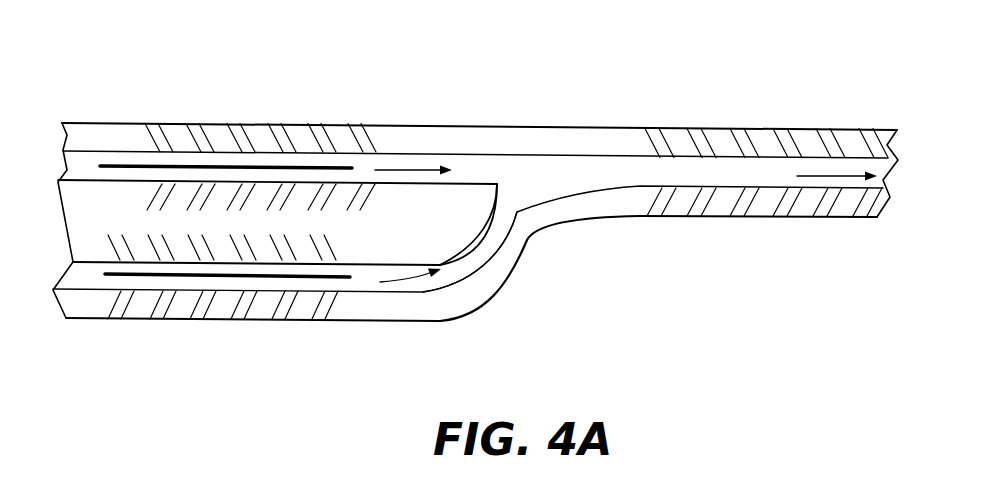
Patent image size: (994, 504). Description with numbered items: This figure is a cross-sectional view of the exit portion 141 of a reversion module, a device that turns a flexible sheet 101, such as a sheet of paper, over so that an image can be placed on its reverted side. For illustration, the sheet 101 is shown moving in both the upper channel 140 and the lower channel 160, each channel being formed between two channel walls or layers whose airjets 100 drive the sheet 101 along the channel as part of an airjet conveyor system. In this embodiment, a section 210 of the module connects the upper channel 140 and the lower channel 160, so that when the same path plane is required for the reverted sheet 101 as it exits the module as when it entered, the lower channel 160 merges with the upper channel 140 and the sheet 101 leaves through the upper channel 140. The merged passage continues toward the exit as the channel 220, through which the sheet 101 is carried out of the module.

The airjets 100 is at (238, 132).
The flexible sheet 101 is at (323, 165).
The upper channel 140 is at (133, 164).
The exit portion 141 is at (578, 24).
The lower channel 160 is at (470, 250).
The section 210 is at (524, 172).
The output channel 220 is at (710, 168).